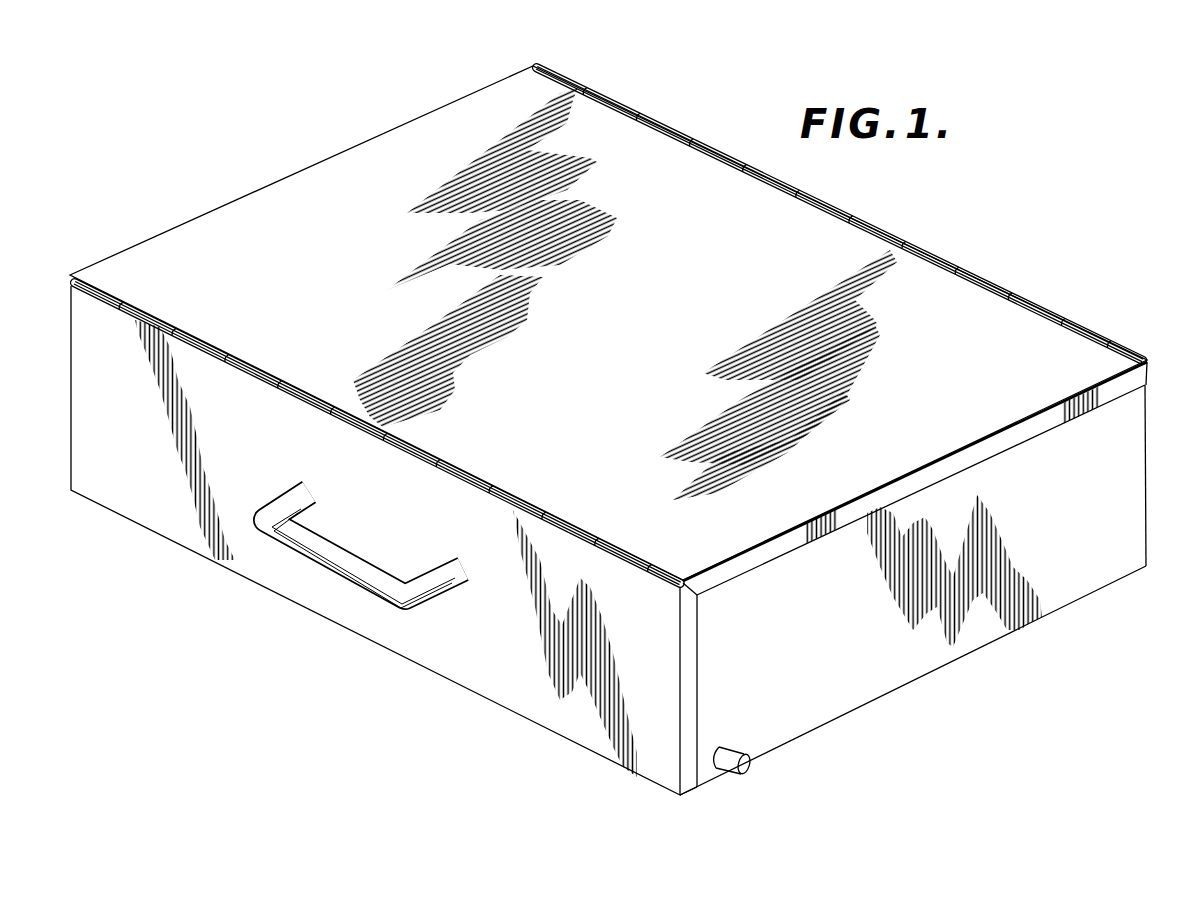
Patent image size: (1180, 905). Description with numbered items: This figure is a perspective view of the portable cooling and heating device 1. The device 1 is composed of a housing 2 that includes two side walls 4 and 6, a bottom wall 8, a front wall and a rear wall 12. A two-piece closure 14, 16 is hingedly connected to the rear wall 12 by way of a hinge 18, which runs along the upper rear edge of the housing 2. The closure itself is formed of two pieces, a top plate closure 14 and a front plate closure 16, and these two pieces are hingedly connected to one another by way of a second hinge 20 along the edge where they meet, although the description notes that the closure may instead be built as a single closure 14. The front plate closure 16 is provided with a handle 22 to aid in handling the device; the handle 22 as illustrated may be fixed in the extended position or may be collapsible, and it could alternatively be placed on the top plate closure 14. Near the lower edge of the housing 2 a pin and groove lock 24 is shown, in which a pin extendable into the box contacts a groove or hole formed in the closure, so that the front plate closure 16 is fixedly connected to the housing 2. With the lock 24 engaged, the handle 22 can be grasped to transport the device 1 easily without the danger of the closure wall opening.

The portable cooling and heating device 1 is at (150, 176).
The housing 2 is at (1014, 660).
The side wall 4 is at (861, 620).
The side wall 6 is at (319, 160).
The bottom wall 8 is at (820, 731).
The rear wall 12 is at (1157, 472).
The top plate closure 14 is at (636, 338).
The front plate closure 16 is at (143, 447).
The hinge 18 is at (1116, 351).
The hinge 20 is at (71, 276).
The handle 22 is at (256, 527).
The pin and groove lock 24 is at (733, 772).